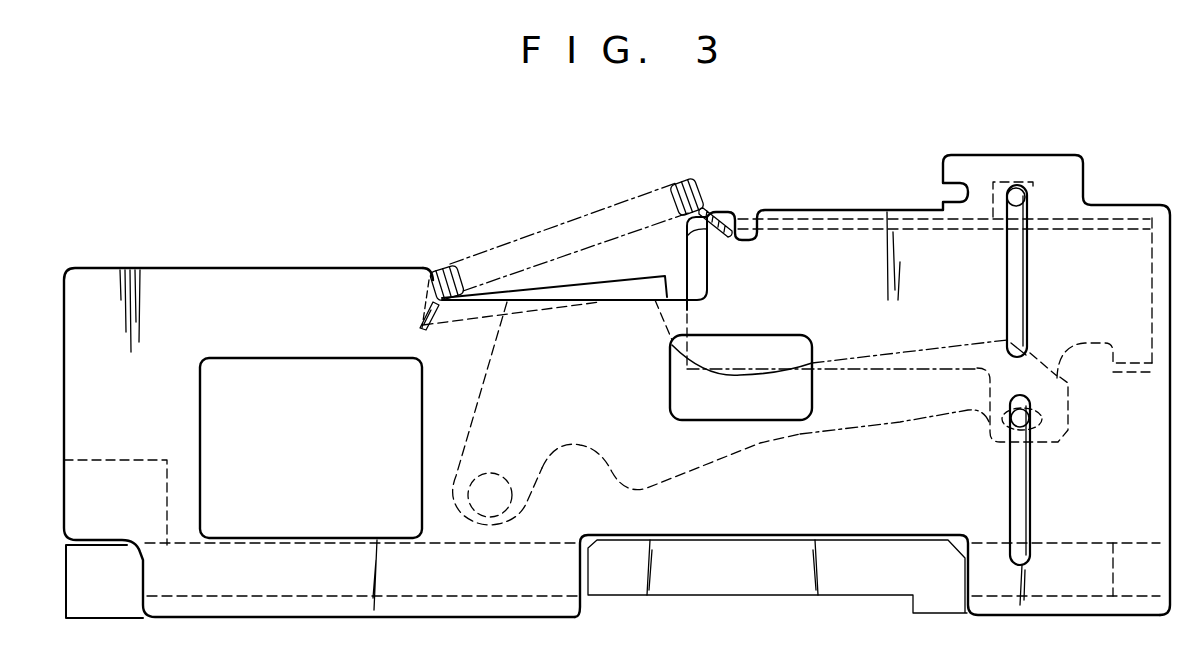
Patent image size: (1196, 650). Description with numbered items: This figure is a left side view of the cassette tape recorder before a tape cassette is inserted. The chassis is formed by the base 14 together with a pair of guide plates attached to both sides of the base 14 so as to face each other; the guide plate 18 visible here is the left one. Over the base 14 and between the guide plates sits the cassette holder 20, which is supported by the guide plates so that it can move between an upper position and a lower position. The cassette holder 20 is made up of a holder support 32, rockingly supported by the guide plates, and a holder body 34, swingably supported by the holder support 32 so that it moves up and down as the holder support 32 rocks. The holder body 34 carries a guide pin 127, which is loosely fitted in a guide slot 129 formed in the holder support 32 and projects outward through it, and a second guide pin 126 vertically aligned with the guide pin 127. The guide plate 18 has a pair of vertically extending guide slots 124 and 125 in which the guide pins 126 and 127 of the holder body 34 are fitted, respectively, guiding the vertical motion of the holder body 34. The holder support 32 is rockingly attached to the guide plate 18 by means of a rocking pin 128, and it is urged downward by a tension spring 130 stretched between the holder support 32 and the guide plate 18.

The base 14 is at (744, 589).
The guide plate 18 is at (292, 270).
The cassette holder 20 is at (904, 430).
The holder support 32 is at (714, 452).
The holder body 34 is at (1130, 230).
The guide slot 124 is at (1025, 276).
The guide slot 125 is at (1030, 492).
The guide pin 126 is at (1027, 199).
The guide pin 127 is at (1017, 406).
The rocking pin 128 is at (487, 480).
The guide slot 129 is at (1070, 423).
The tension spring 130 is at (477, 261).